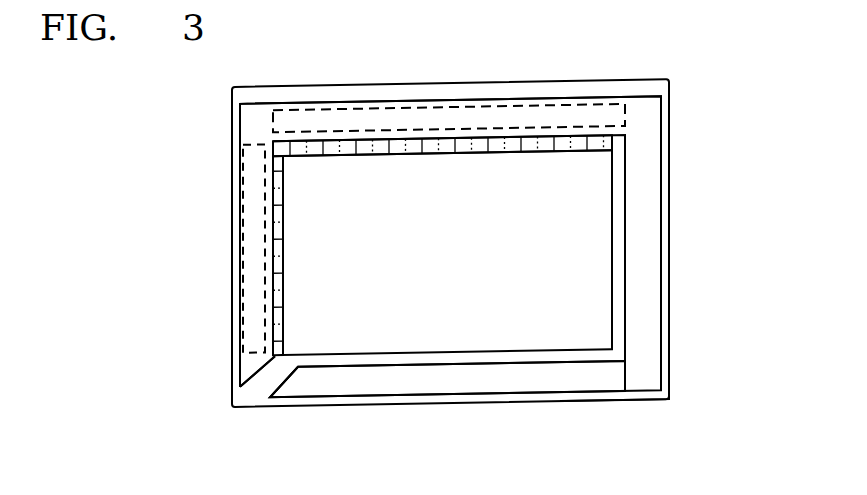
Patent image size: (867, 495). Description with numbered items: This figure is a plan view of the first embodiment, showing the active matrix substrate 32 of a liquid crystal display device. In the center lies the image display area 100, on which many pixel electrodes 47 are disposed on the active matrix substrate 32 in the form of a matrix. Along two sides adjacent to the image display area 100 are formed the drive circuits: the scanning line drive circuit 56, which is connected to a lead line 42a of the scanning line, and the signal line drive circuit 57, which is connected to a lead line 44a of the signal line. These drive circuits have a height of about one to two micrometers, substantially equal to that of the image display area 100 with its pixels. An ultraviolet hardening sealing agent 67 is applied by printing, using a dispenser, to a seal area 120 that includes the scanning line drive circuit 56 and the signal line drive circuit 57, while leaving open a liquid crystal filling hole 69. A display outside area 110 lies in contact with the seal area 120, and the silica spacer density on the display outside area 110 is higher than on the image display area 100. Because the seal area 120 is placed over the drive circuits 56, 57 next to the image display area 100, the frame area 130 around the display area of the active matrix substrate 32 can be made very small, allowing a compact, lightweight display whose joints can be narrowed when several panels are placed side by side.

The active matrix substrate 32 is at (670, 153).
The ultraviolet hardening sealing agent 67 is at (652, 243).
The seal area 120 is at (697, 238).
The pixel electrodes 47 is at (433, 348).
The liquid crystal filling hole 69 is at (258, 390).
The image display area 100 is at (447, 252).
The signal line drive circuit 57 is at (428, 115).
The display outside area 110 is at (614, 146).
The scanning line drive circuit 56 is at (253, 244).
The lead line of the signal line 44a is at (335, 158).
The lead line of the scanning line 42a is at (271, 160).
The frame area 130 is at (670, 352).